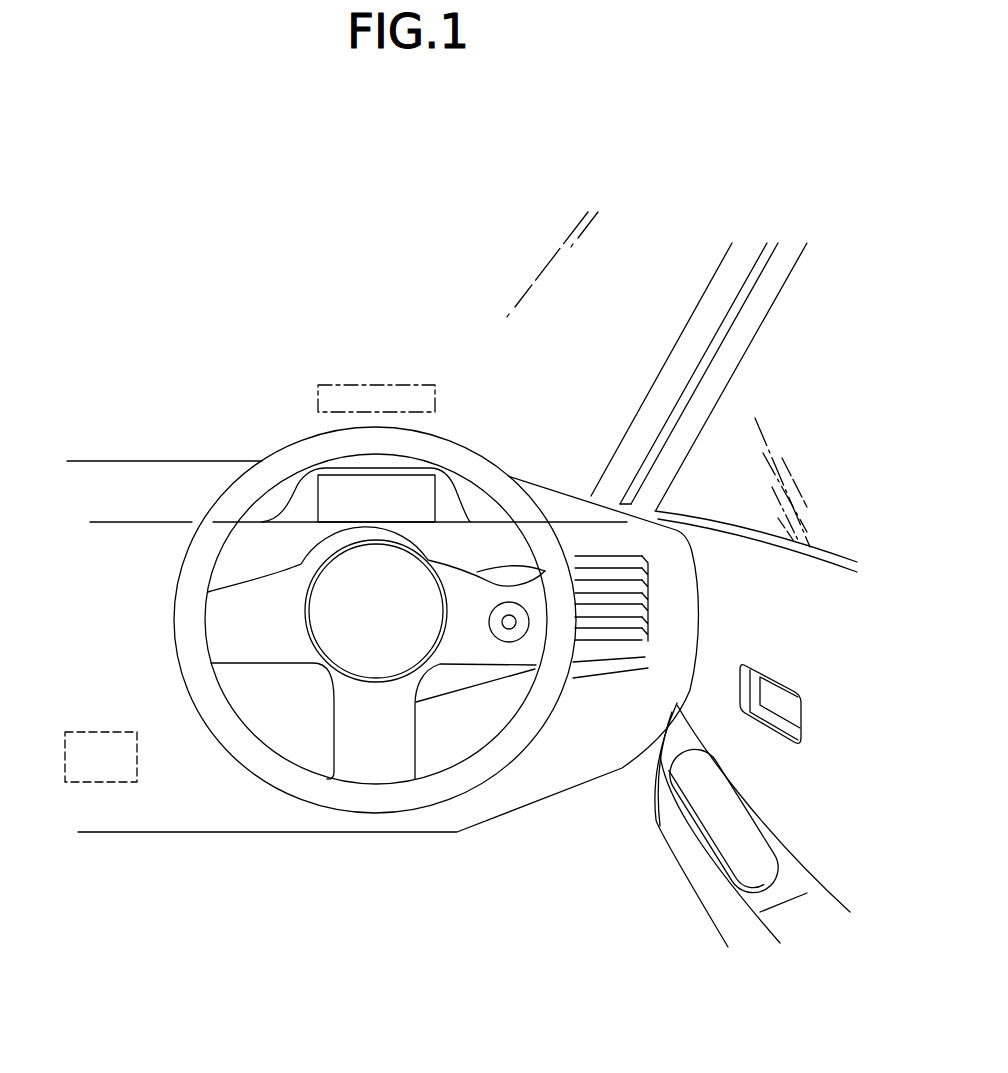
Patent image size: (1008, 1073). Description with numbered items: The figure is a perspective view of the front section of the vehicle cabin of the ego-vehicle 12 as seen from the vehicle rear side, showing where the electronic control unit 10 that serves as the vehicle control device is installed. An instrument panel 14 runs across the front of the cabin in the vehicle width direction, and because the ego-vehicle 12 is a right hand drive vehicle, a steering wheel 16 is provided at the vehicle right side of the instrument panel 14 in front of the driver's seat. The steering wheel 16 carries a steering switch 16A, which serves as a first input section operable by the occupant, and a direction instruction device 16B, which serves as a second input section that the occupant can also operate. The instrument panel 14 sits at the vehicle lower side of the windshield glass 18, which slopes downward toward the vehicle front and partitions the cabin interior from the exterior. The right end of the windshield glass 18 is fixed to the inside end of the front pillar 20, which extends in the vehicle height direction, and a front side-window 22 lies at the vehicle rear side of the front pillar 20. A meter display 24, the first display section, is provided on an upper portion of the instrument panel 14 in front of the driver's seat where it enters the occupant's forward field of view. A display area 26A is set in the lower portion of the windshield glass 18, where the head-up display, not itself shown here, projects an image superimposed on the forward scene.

The electronic control unit 10 is at (112, 784).
The vehicle 12 is at (323, 231).
The instrument panel 14 is at (560, 793).
The steering wheel 16 is at (510, 501).
The steering switch 16A is at (502, 602).
The direction instruction device 16B is at (502, 565).
The windshield glass 18 is at (613, 348).
The front pillar 20 is at (711, 288).
The front side-window 22 is at (830, 503).
The meter display 24 is at (318, 498).
The display area 26A is at (377, 385).